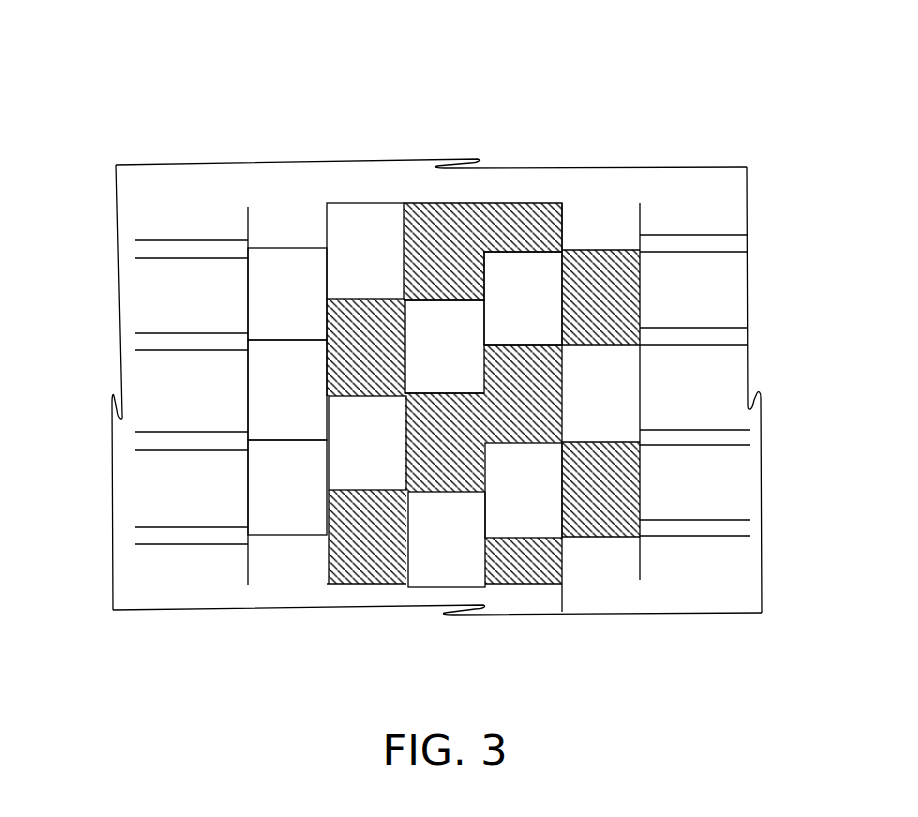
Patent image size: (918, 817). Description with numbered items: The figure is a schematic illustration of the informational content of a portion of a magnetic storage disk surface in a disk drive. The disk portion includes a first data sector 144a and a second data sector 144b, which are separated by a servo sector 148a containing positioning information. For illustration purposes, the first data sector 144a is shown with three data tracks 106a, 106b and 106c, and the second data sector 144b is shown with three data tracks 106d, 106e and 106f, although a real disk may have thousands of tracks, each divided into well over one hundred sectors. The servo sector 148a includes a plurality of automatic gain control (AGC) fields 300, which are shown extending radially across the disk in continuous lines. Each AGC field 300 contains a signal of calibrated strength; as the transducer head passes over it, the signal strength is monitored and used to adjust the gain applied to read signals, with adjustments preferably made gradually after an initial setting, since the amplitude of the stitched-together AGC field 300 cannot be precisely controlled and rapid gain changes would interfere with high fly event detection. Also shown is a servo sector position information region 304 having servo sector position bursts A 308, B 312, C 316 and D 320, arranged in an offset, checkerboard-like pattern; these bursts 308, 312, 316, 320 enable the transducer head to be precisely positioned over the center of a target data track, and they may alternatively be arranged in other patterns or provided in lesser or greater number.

The servo sector position information region 304 is at (638, 67).
The data sector 144a is at (122, 140).
The servo sector 148a is at (640, 137).
The data sector 144b is at (645, 138).
The data track 106a is at (138, 303).
The data track 106b is at (130, 385).
The data track 106c is at (138, 495).
The data track 106d is at (738, 308).
The data track 106e is at (743, 382).
The data track 106f is at (738, 480).
The automatic gain control (AGC) field 300 is at (287, 522).
The servo sector position burst A 308 is at (370, 475).
The servo sector position burst B 312 is at (430, 568).
The servo sector position burst C 316 is at (537, 520).
The servo sector position burst D 320 is at (618, 427).